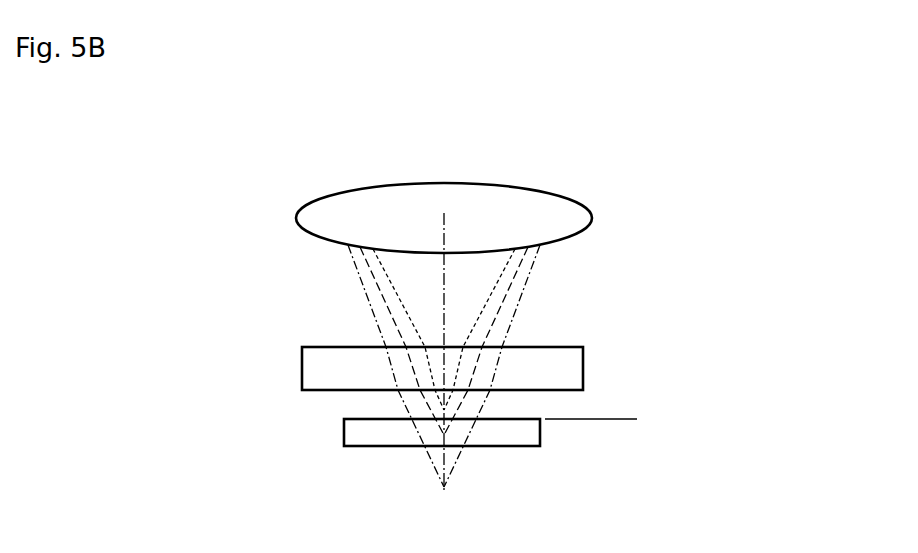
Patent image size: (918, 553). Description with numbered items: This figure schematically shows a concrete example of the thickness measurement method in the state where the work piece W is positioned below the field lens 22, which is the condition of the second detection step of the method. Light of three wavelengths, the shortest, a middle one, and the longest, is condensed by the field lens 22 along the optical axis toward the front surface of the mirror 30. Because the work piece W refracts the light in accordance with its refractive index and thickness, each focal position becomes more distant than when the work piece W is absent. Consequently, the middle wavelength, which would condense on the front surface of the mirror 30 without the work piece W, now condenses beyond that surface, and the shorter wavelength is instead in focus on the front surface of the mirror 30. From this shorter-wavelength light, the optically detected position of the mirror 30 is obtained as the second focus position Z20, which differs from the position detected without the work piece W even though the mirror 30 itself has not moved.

The field lens 22 is at (580, 215).
The work piece W is at (565, 365).
The second focus position Z20 is at (641, 423).
The mirror 30 is at (518, 433).